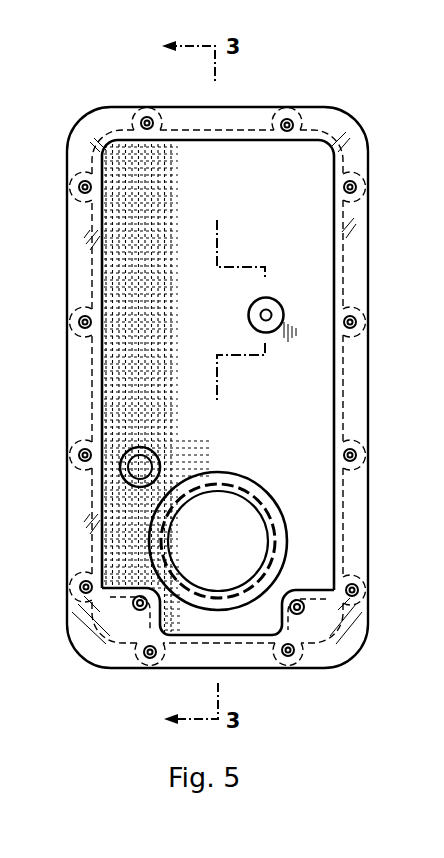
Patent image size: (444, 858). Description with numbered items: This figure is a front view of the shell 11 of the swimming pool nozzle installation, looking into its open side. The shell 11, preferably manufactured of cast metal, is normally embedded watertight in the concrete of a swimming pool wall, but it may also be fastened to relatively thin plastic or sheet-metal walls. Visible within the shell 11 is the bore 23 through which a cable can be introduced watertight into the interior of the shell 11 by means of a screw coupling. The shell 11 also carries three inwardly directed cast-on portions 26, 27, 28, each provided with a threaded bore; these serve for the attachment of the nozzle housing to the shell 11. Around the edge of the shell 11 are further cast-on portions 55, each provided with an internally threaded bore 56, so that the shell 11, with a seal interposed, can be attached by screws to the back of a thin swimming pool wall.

The shell 11 is at (343, 106).
The bore 23 is at (150, 462).
The inwardly directed cast-on portion 26 is at (276, 307).
The inwardly directed cast-on portion 27 is at (139, 616).
The inwardly directed cast-on portion 28 is at (302, 618).
The cast-on portions 55 is at (158, 112).
The internally threaded bores 56 is at (92, 187).